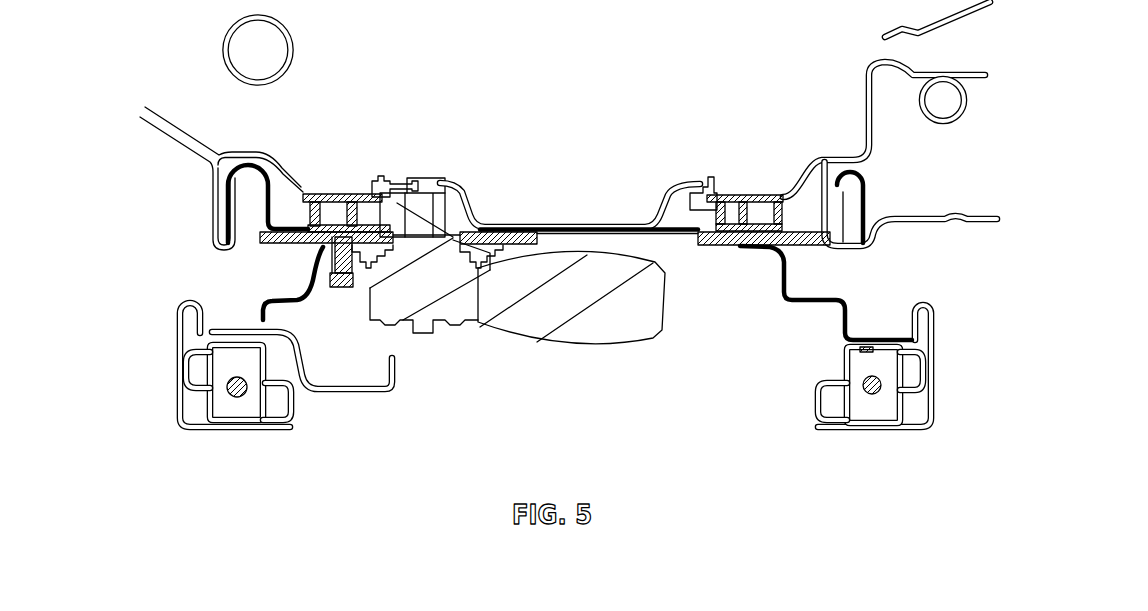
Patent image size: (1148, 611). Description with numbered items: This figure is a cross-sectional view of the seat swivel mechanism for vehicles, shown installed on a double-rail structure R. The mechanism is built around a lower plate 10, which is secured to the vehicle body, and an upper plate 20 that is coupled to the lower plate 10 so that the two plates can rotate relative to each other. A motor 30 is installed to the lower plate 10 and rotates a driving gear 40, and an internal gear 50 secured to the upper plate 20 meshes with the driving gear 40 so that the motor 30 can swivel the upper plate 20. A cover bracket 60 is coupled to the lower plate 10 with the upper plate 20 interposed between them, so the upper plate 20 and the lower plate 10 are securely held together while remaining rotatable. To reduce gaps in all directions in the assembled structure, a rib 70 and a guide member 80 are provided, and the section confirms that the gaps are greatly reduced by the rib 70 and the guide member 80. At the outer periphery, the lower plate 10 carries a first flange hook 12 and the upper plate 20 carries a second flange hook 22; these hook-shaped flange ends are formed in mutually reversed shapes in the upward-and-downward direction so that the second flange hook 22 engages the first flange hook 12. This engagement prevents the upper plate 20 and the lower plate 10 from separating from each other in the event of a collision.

The lower plate 10 is at (673, 234).
The first flange hook 12 is at (220, 210).
The upper plate 20 is at (212, 177).
The second flange hook 22 is at (258, 246).
The motor 30 is at (568, 345).
The driving gear 40 is at (440, 207).
The internal gear 50 is at (400, 193).
The cover bracket 60 is at (467, 180).
The rib 70 is at (385, 183).
The guide member 80 is at (303, 190).
The double-rail structure R is at (297, 405).